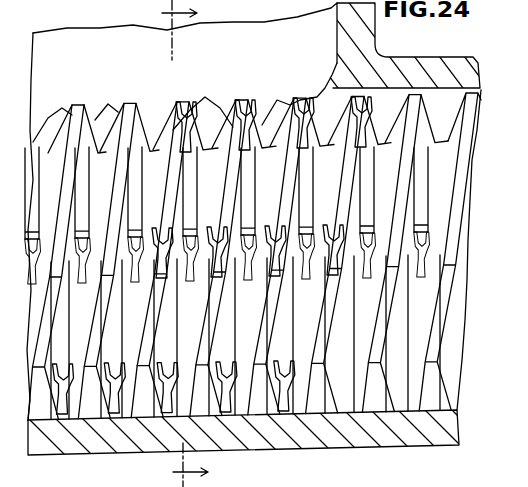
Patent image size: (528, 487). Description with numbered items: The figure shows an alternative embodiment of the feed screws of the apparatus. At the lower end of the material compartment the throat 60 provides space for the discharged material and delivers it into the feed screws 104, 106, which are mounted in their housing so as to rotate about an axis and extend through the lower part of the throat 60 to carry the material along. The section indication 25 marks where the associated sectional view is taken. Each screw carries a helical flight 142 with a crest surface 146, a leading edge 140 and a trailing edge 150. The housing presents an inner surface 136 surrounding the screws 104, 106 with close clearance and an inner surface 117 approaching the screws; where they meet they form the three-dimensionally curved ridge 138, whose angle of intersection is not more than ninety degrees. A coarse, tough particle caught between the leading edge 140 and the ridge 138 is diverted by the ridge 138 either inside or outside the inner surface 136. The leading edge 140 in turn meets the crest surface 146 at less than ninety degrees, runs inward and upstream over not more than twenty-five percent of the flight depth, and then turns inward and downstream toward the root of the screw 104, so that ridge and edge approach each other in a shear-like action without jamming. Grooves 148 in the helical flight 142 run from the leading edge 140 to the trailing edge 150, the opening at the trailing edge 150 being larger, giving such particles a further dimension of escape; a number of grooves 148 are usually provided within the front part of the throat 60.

The section line 25- 25 is at (165, 243).
The throat 60 is at (362, 44).
The feed screw 104 is at (449, 198).
The feed screw 106 is at (451, 322).
The inner surface approaching the screws 117 is at (337, 30).
The inner surface surrounding the screws 136 is at (84, 424).
The three-dimensionally curved ridge 138 is at (334, 86).
The leading edge 140 is at (85, 122).
The helical flight 142 is at (470, 113).
The crest surface 146 is at (78, 105).
The groove 148 is at (183, 128).
The trailing edge 150 is at (67, 138).